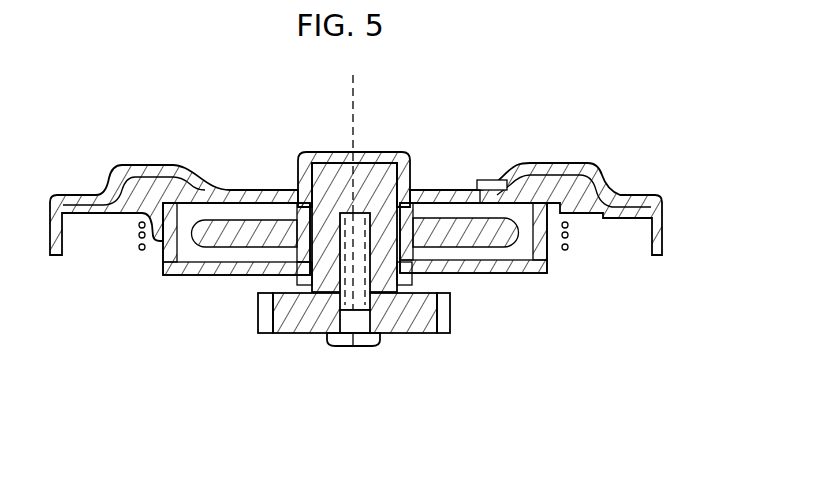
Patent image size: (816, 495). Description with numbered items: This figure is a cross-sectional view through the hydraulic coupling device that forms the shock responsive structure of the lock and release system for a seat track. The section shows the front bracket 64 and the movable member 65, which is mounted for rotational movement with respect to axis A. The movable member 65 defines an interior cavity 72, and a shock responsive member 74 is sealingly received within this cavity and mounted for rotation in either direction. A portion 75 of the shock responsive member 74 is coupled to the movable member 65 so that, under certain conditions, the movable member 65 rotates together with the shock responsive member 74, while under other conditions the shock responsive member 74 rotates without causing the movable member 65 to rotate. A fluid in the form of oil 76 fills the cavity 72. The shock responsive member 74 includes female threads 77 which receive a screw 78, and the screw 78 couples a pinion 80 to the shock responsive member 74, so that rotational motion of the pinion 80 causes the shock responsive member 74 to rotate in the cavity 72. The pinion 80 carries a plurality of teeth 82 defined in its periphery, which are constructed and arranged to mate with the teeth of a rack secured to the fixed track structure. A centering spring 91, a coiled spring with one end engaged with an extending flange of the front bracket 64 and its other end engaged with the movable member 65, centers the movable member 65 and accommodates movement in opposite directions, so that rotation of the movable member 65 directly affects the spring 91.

The axis A is at (361, 130).
The front bracket 64 is at (140, 167).
The movable member 65 is at (458, 190).
The interior cavity 72 is at (200, 255).
The shock responsive member 74 is at (294, 192).
The portion of shock responsive member 75 is at (330, 157).
The oil 76 is at (512, 255).
The female threads 77 is at (420, 197).
The screw 78 is at (367, 337).
The pinion 80 is at (285, 320).
The teeth 82 is at (452, 320).
The centering spring 91 is at (568, 248).